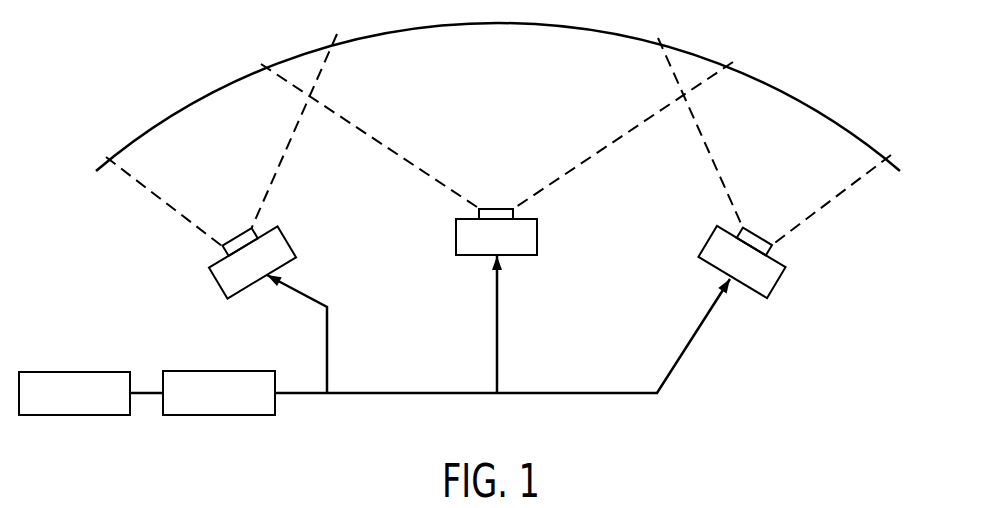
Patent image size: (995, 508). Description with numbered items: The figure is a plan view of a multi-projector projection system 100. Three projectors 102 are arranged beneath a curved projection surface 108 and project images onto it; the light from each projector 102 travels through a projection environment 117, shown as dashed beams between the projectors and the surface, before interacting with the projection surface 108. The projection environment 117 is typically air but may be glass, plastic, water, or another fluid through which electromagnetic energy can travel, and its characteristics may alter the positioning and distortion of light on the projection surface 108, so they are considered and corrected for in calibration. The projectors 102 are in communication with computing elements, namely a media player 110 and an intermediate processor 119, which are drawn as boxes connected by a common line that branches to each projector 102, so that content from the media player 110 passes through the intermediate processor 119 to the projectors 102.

The projection system 100 is at (169, 81).
The projection surface 108 is at (797, 98).
The projection environment 117 is at (197, 180).
The projector 102 is at (287, 238).
The media player 110 is at (88, 415).
The intermediate processor 119 is at (238, 415).